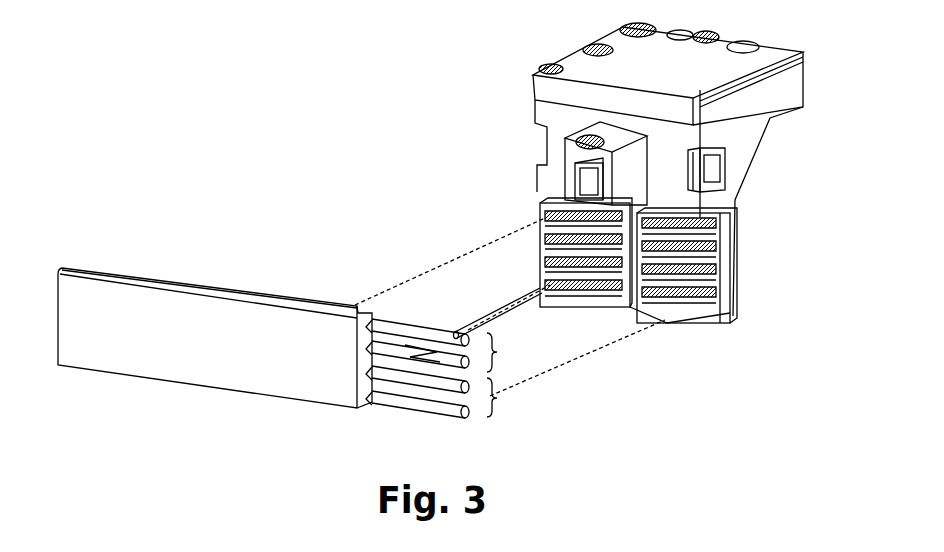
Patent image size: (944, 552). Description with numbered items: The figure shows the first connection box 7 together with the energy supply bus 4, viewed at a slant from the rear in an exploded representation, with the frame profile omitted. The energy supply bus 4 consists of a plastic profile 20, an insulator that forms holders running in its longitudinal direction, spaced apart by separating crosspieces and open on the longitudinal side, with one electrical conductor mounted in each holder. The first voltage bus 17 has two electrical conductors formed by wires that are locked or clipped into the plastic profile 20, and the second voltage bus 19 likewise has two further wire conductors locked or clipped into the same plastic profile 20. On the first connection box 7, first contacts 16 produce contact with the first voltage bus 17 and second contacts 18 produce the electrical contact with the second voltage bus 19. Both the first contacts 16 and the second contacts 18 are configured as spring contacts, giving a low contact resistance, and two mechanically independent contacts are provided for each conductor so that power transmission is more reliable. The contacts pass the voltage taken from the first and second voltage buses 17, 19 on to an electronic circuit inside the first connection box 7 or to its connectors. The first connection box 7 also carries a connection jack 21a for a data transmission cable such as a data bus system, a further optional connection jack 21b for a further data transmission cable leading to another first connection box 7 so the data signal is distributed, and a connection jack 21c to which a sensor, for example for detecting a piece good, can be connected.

The energy supply bus 4 is at (160, 272).
The plastic profile 20 is at (308, 302).
The first voltage bus 17 is at (507, 360).
The second voltage bus 19 is at (503, 402).
The first connection box 7 is at (540, 95).
The first contacts 16 is at (565, 202).
The second contacts 18 is at (553, 228).
The connection jack 21a is at (582, 172).
The further connection jack 21b is at (633, 183).
The connection jack 21c is at (590, 142).